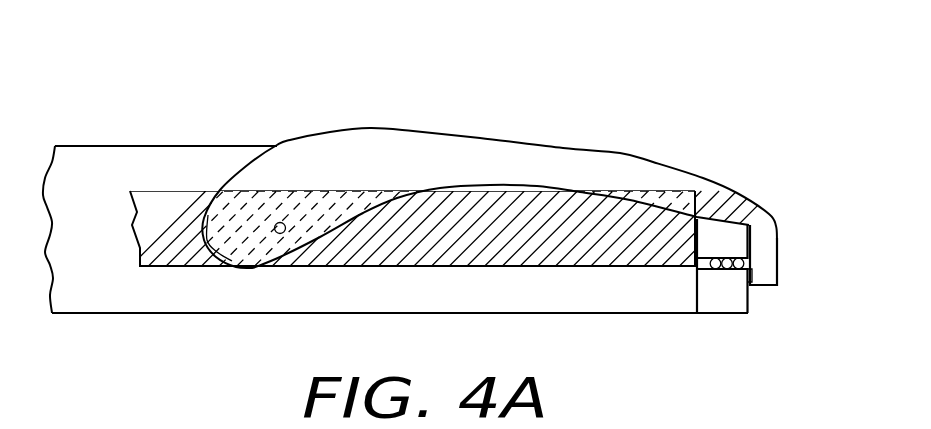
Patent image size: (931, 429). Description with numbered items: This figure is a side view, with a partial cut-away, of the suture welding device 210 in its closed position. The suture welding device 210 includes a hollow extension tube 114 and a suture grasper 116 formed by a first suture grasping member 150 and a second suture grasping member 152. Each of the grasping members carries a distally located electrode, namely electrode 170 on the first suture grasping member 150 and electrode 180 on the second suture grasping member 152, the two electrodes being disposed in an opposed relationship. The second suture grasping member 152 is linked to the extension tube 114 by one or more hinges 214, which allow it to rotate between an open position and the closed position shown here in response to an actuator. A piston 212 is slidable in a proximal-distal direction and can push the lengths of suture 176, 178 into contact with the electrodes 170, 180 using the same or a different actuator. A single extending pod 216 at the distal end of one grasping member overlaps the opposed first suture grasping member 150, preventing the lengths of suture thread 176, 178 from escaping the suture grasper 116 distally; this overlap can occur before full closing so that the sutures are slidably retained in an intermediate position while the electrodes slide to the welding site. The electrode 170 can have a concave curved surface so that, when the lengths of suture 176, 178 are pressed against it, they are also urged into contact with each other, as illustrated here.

The suture welding device 210 is at (247, 79).
The hollow extension tube 114 is at (140, 146).
The second suture grasping member 152 is at (480, 137).
The suture grasper 116 is at (650, 138).
The electrode 180 is at (725, 237).
The extending pod 216 is at (780, 245).
The hinge 214 is at (276, 223).
The piston 212 is at (426, 252).
The length of suture 176 is at (752, 275).
The length of suture 178 is at (703, 265).
The electrode 170 is at (718, 283).
The first suture grasping member 150 is at (472, 313).